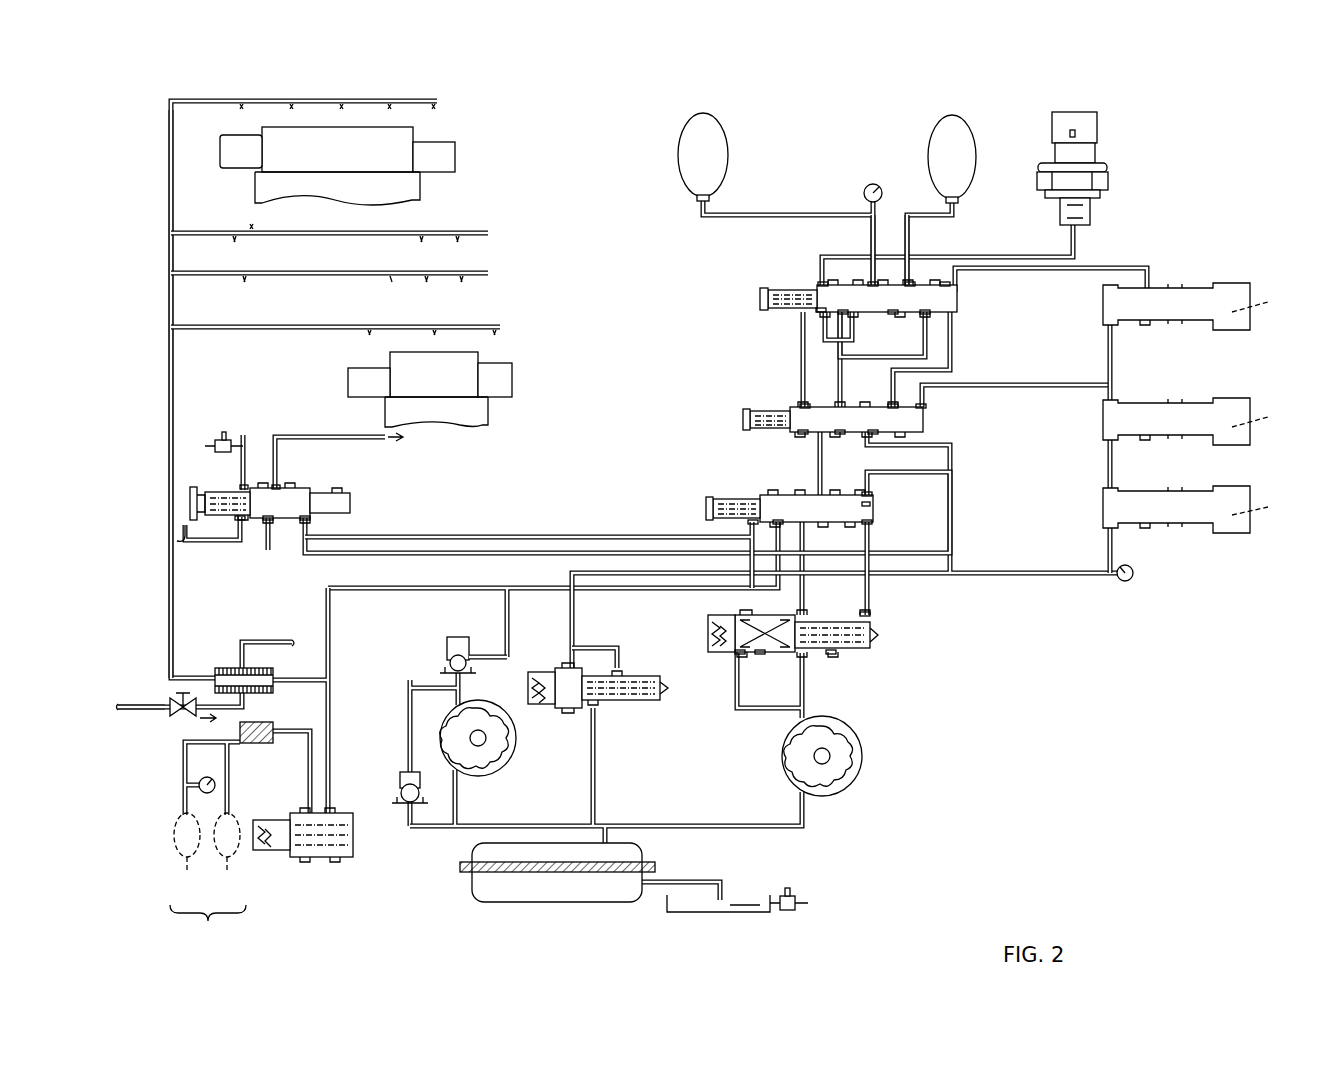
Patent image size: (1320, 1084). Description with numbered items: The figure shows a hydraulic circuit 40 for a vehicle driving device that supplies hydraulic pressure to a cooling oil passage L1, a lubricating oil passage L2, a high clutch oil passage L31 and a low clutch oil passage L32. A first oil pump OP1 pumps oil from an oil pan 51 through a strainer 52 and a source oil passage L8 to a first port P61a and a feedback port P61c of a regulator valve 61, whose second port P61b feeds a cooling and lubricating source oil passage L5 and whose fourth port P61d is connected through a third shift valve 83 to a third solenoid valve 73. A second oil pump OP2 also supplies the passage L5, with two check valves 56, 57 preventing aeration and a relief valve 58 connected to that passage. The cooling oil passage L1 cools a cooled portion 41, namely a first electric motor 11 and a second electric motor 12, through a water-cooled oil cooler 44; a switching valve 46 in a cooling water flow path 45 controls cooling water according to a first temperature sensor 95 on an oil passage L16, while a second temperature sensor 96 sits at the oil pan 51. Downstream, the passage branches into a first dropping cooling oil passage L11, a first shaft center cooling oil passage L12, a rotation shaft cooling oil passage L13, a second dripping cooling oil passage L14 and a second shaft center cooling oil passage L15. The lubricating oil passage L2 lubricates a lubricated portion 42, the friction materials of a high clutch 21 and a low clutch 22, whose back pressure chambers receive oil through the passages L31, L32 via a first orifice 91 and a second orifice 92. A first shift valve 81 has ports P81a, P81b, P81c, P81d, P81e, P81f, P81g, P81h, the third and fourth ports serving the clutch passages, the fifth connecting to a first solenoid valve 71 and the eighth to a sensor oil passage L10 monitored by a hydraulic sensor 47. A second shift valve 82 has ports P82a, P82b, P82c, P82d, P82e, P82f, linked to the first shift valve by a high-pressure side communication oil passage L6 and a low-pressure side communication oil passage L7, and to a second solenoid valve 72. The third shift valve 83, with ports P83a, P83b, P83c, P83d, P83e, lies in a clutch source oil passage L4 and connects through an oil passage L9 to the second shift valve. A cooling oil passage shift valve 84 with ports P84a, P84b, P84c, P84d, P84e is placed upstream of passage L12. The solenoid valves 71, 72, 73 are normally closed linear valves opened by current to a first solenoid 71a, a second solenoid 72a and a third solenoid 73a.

The hydraulic circuit 40 is at (1036, 698).
The cooled portion 41 is at (148, 174).
The lubricated portion 42 is at (208, 878).
The oil cooler 44 is at (222, 665).
The cooling water flow path 45 is at (148, 712).
The switching valve 46 is at (178, 730).
The hydraulic sensor 47 is at (1120, 143).
The oil pan 51 is at (718, 912).
The strainer 52 is at (562, 902).
The check valve 56 is at (458, 636).
The check valve 57 is at (405, 806).
The relief valve 58 is at (625, 720).
The regulator valve 61 is at (890, 660).
The first solenoid valve 71 is at (1260, 284).
The first solenoid 71a is at (1270, 304).
The second solenoid valve 72 is at (1258, 397).
The second solenoid 72a is at (1270, 417).
The third solenoid valve 73 is at (1256, 490).
The third solenoid 73a is at (1268, 514).
The first shift valve 81 is at (744, 303).
The second shift valve 82 is at (728, 420).
The third shift valve 83 is at (693, 505).
The cooling oil passage shift valve 84 is at (362, 507).
The first orifice 91 is at (860, 237).
The second orifice 92 is at (921, 236).
The first temperature sensor 95 is at (216, 432).
The second temperature sensor 96 is at (794, 919).
The first electric motor 11 is at (527, 388).
The second electric motor 12 is at (466, 158).
The high clutch 21 is at (727, 102).
The low clutch 22 is at (994, 110).
The first oil pump OP1 is at (876, 757).
The second oil pump OP2 is at (528, 752).
The cooling oil passage L1 is at (169, 603).
The lubricating oil passage L2 is at (330, 710).
The clutch source oil passage L4 is at (806, 588).
The cooling and lubricating source oil passage L5 is at (628, 586).
The high-pressure side communication oil passage L6 is at (804, 373).
The low-pressure side communication oil passage L7 is at (835, 373).
The source oil passage L8 is at (801, 705).
The oil passage L9 is at (818, 478).
The sensor oil passage L10 is at (1000, 255).
The first dropping cooling oil passage L11 is at (500, 324).
The first shaft center cooling oil passage L12 is at (330, 435).
The rotation shaft cooling oil passage L13 is at (488, 270).
The second dripping cooling oil passage L14 is at (430, 100).
The second shaft center cooling oil passage L15 is at (488, 230).
The oil passage L16 is at (250, 470).
The high clutch oil passage L31 is at (815, 212).
The low clutch oil passage L32 is at (910, 212).
The first port P81a is at (818, 310).
The second port P81b is at (925, 315).
The third port P81c is at (873, 282).
The fourth port P81d is at (912, 287).
The fifth port P81e is at (958, 288).
The sixth port P81f is at (870, 316).
The seventh port P81g is at (840, 314).
The eighth port P81h is at (820, 282).
The first port P82a is at (803, 434).
The second port P82b is at (872, 436).
The third port P82c is at (803, 404).
The fourth port P82d is at (840, 420).
The fifth port P82e is at (895, 404).
The sixth port P82f is at (922, 406).
The first port P83a is at (752, 522).
The second port P83b is at (778, 540).
The third port P83c is at (822, 525).
The fourth port P83d is at (870, 494).
The fifth port P83e is at (870, 505).
The first port P84a is at (238, 522).
The second port P84b is at (268, 522).
The third port P84c is at (312, 520).
The fourth port P84d is at (245, 486).
The fifth port P84e is at (280, 486).
The first port P61a is at (832, 655).
The second port P61b is at (762, 655).
The feedback port P61c is at (738, 655).
The fourth port P61d is at (868, 614).